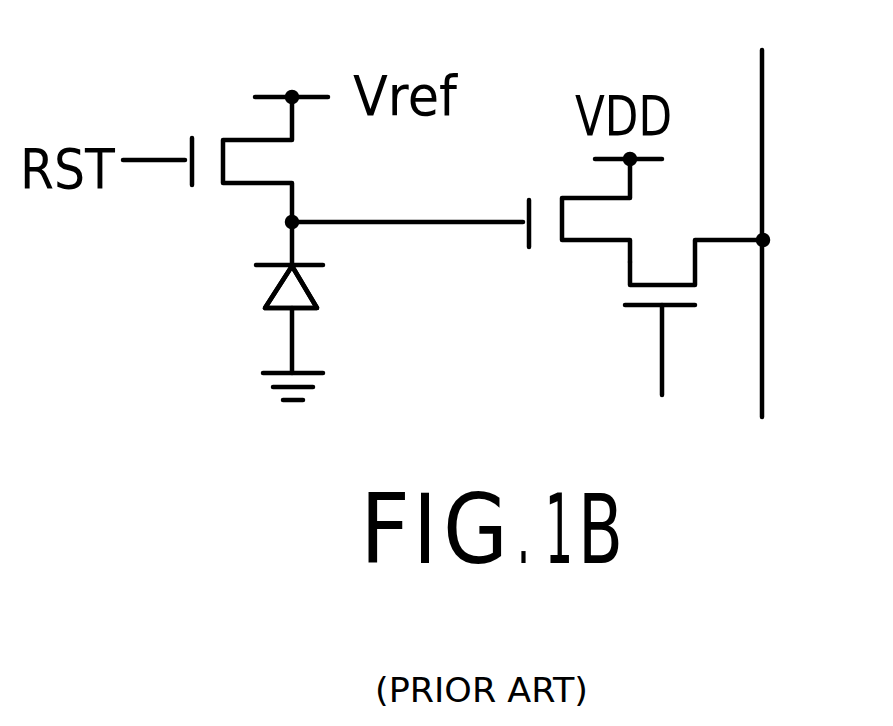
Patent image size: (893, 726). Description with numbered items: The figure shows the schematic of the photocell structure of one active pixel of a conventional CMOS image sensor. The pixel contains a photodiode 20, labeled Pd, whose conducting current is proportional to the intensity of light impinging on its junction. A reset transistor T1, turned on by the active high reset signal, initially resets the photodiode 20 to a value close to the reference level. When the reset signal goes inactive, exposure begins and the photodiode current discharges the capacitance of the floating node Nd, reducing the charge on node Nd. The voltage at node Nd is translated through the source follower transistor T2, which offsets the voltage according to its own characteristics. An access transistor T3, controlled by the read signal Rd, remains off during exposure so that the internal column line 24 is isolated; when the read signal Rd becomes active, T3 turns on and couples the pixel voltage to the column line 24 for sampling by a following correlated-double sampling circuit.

The photodiode 20 is at (318, 292).
The internal column line 24 is at (762, 82).
The reset transistor T1 is at (207, 148).
The source follower transistor T2 is at (570, 198).
The access transistor T3 is at (660, 286).
The floating node Nd is at (370, 216).
The photodiode Pd is at (261, 309).
The read signal Rd is at (652, 380).